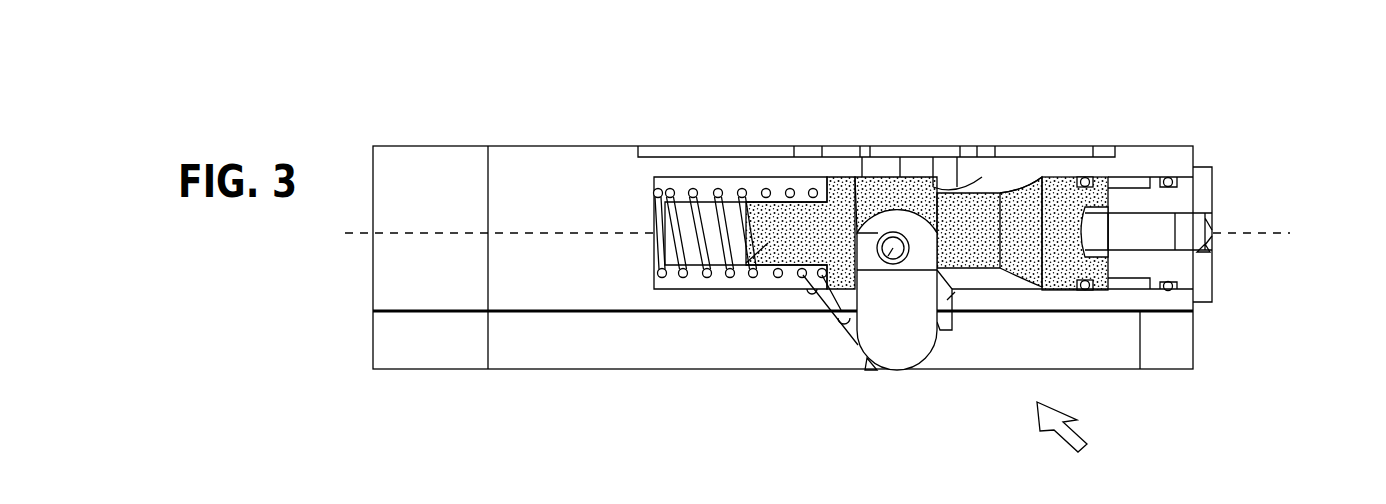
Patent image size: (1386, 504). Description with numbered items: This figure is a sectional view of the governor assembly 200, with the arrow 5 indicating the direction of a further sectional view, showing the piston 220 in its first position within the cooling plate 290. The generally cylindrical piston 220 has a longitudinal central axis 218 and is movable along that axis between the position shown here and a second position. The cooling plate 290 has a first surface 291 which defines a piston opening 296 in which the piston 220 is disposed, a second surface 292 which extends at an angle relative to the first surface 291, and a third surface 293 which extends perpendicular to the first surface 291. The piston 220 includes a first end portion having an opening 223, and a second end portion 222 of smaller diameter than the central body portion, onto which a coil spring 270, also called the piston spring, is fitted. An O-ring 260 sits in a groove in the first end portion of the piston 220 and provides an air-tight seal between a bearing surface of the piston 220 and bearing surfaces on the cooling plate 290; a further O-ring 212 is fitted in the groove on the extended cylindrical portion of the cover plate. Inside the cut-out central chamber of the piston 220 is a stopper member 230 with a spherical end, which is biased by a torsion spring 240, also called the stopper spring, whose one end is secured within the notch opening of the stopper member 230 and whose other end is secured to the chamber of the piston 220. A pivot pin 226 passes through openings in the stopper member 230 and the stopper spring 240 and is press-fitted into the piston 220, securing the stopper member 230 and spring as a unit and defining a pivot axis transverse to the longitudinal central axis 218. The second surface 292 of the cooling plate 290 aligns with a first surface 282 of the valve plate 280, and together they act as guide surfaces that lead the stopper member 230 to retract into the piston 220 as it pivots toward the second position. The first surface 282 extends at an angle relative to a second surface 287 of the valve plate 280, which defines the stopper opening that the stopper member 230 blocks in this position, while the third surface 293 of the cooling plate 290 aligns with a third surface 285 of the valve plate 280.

The dispensing assembly 200 is at (1171, 95).
The cooling plate 290 is at (393, 262).
The longitudinal central axis 218 is at (440, 233).
The valve plate 280 is at (508, 355).
The O-ring 212 is at (1170, 289).
The coil spring 270 is at (662, 277).
The second end portion 222 is at (740, 275).
The second surface 292 is at (805, 275).
The torsion spring 240 is at (874, 232).
The first surface 291 is at (960, 184).
The piston opening 296 is at (992, 193).
The piston 220 is at (1030, 197).
The O-ring 260 is at (1090, 289).
The opening 223 is at (1210, 250).
The third surface 293 is at (960, 308).
The third surface 285 is at (943, 305).
The first surface 282 is at (845, 333).
The second surface 287 is at (866, 358).
The stopper member 230 is at (916, 335).
The pivot pin 226 is at (880, 270).
The view direction arrow 5 is at (1068, 443).